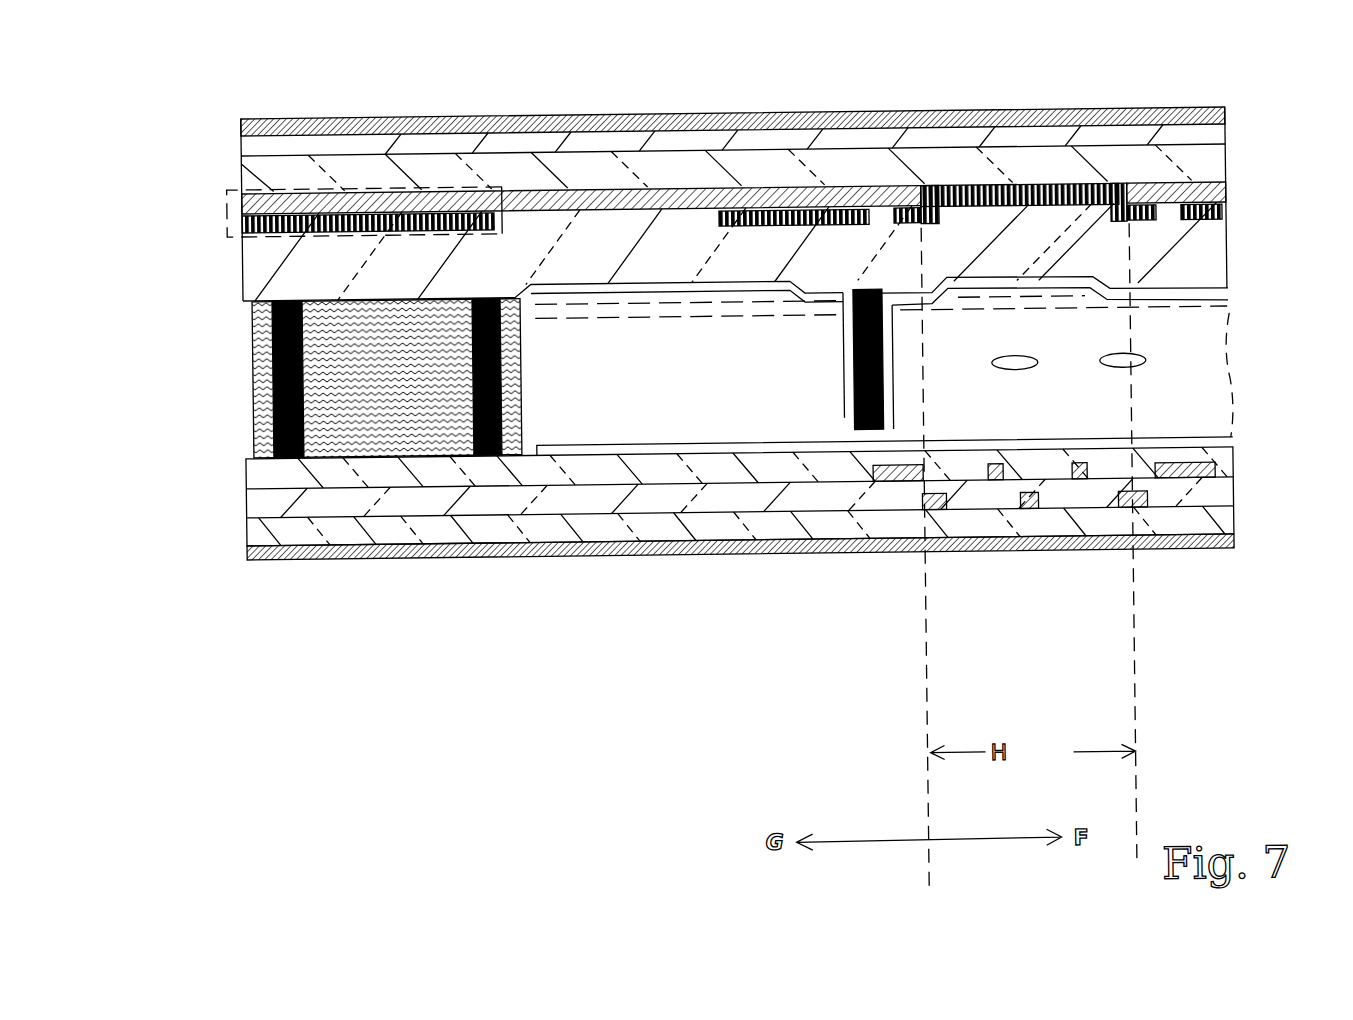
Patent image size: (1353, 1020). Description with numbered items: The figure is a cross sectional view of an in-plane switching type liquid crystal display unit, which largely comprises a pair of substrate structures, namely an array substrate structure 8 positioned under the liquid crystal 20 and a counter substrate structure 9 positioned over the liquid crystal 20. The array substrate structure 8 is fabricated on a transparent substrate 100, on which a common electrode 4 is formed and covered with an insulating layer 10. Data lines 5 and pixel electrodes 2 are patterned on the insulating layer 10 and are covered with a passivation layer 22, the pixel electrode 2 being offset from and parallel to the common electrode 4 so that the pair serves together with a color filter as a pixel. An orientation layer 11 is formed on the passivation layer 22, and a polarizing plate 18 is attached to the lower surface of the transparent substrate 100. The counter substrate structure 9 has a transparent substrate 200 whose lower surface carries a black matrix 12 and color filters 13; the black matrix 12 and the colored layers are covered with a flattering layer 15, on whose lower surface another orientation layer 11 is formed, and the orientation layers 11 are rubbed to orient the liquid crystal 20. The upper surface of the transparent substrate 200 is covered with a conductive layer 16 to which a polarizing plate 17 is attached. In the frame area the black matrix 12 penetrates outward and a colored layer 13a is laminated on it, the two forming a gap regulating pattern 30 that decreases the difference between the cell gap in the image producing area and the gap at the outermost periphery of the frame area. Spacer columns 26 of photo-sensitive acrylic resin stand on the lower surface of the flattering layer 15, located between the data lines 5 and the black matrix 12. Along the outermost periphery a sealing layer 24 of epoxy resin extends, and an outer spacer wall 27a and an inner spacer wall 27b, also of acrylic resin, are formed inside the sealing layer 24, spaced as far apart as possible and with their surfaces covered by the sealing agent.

The pixel electrode 2 is at (1071, 467).
The common electrode 4 is at (1120, 518).
The data line 5 is at (1174, 489).
The array substrate structure 8 is at (1280, 509).
The counter substrate structure 9 is at (1282, 236).
The insulating layer 10 is at (1085, 489).
The orientation layer 11 is at (682, 297).
The black matrix 12 is at (281, 206).
The color filter 13 is at (1115, 194).
The colored layer 13a is at (244, 222).
The flattering layer 15 is at (561, 256).
The conductive layer 16 is at (940, 146).
The polarizing plate 17 is at (772, 121).
The polarizing plate 18 is at (452, 562).
The liquid crystal 20 is at (1147, 373).
The passivation layer 22 is at (394, 475).
The sealing layer 24 is at (259, 443).
The spacer column 26 is at (850, 413).
The outer spacer wall 27a is at (266, 380).
The inner spacer wall 27b is at (511, 381).
The gap regulating pattern 30 is at (242, 165).
The transparent substrate 100 is at (529, 534).
The transparent substrate 200 is at (480, 181).